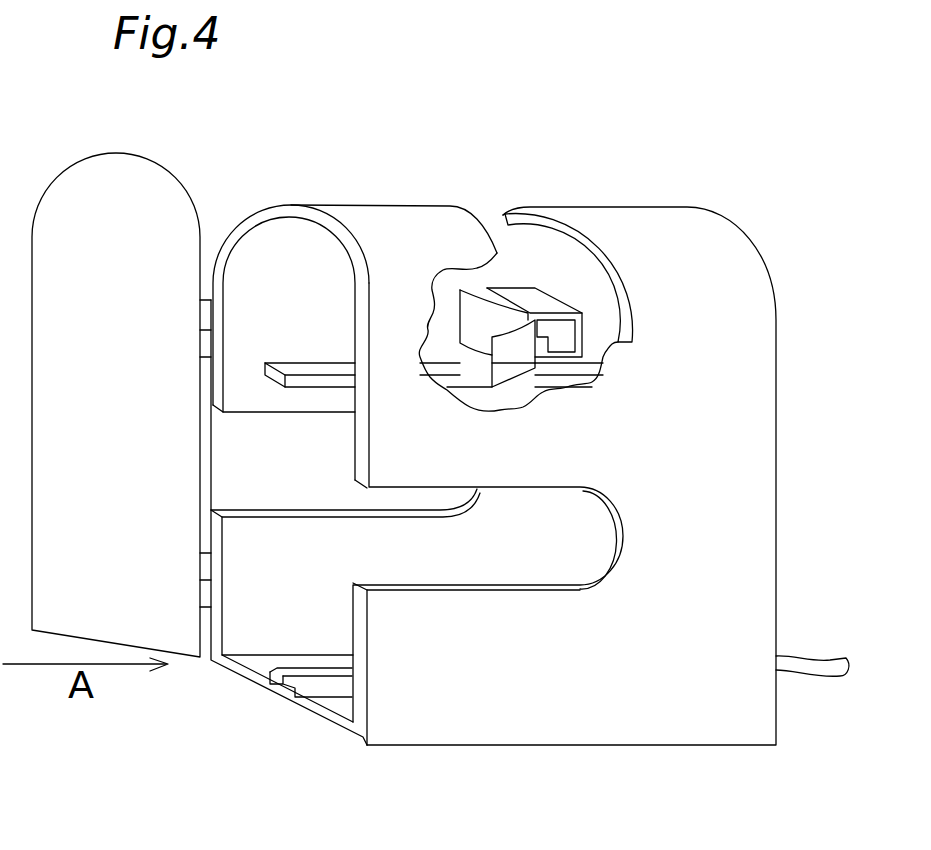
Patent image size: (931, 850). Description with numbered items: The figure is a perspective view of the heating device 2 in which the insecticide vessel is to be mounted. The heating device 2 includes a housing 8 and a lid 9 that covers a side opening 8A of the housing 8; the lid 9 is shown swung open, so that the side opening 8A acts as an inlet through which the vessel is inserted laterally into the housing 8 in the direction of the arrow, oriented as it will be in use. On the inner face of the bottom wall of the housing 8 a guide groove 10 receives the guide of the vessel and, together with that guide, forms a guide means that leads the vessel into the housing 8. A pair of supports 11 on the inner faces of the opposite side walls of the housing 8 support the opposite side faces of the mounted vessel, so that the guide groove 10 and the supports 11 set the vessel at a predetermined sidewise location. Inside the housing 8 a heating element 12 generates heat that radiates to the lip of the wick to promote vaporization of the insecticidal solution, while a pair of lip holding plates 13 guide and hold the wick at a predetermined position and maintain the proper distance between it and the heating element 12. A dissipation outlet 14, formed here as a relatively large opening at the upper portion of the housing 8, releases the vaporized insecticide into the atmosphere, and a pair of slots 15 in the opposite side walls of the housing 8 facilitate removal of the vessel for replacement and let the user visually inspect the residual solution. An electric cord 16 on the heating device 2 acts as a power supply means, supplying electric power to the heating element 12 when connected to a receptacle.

The heating device 2 is at (610, 160).
The housing 8 is at (386, 196).
The side opening 8A is at (280, 248).
The lid 9 is at (137, 161).
The guide groove 10 is at (288, 686).
The supports 11 is at (293, 362).
The heating element 12 is at (568, 332).
The lip holding plates 13 is at (468, 302).
The dissipation outlet 14 is at (577, 232).
The slots 15 is at (342, 513).
The electric cord 16 is at (822, 660).